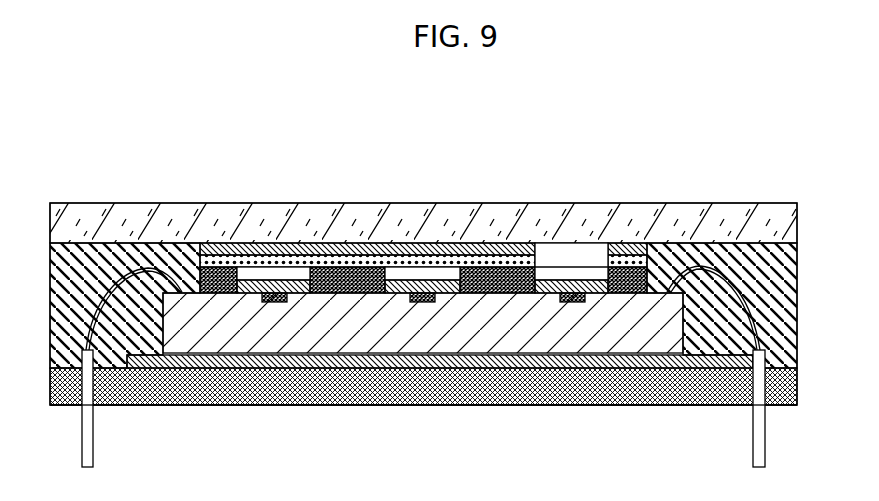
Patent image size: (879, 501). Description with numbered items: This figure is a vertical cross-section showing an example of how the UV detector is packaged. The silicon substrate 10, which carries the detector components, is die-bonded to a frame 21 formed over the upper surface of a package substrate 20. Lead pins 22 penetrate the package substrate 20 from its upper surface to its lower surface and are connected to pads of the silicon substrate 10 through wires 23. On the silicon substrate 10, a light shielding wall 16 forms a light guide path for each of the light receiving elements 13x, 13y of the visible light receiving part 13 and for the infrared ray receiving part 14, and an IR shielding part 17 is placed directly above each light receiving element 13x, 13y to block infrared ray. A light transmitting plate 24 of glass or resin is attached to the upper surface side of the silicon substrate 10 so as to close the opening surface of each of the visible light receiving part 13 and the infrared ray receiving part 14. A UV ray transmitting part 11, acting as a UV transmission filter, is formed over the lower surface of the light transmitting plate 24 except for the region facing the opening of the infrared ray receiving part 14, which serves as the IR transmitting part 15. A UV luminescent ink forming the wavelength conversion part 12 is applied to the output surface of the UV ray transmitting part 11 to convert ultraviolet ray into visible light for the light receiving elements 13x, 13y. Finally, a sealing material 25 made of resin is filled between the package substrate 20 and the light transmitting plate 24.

The silicon substrate 10 is at (236, 353).
The UV ray transmitting part 11 is at (352, 249).
The wavelength conversion part 12 is at (479, 261).
The visible light receiving part 13 is at (448, 336).
The light receiving element 13x is at (283, 303).
The light receiving element 13y is at (441, 315).
The infrared ray receiving part 14 is at (573, 303).
The IR transmitting part 15 is at (575, 275).
The light shielding wall 16 is at (249, 300).
The IR shielding part 17 is at (274, 272).
The package substrate 20 is at (418, 400).
The frame 21 is at (608, 390).
The lead pins 22 is at (82, 437).
The wires 23 is at (425, 303).
The light transmitting plate 24 is at (155, 214).
The sealing material 25 is at (50, 304).